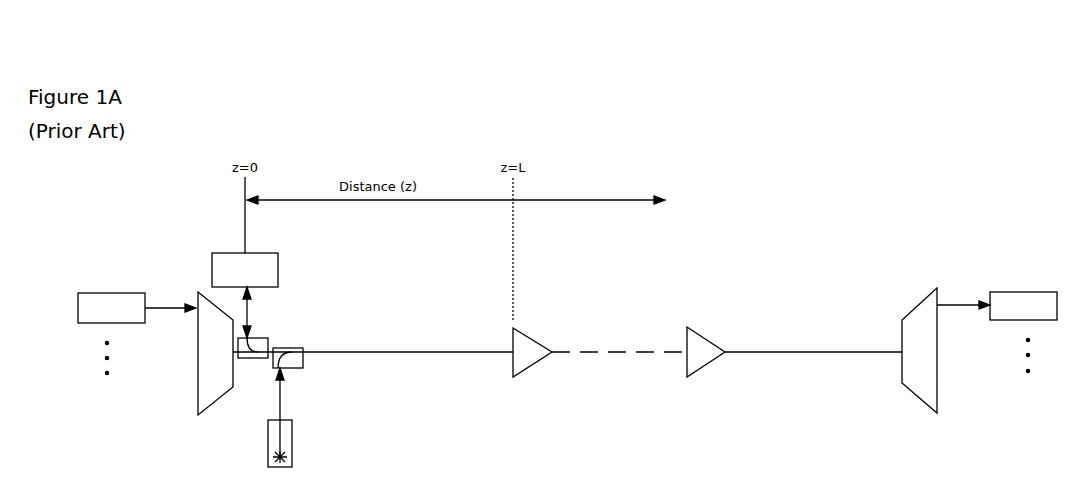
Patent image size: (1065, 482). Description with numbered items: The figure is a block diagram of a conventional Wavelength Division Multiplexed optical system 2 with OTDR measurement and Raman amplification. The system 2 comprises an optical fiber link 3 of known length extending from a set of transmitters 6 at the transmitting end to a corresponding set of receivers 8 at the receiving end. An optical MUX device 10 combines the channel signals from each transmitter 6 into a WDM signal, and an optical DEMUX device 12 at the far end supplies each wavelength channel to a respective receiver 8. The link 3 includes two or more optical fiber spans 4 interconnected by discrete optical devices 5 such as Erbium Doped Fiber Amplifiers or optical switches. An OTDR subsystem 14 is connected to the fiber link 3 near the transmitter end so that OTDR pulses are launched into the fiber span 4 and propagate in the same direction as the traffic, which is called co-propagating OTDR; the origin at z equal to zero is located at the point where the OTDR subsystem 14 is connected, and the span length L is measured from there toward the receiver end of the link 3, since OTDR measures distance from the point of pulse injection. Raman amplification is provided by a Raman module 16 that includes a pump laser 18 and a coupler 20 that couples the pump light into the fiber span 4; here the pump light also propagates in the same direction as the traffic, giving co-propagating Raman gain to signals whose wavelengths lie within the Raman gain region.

The optical system 2 is at (924, 176).
The optical fiber link 3 is at (726, 289).
The optical fiber span 4 is at (390, 351).
The discrete optical device 5 is at (538, 333).
The transmitter 6 is at (97, 292).
The receiver 8 is at (1030, 291).
The optical MUX device 10 is at (195, 405).
The optical DEMUX device 12 is at (940, 395).
The OTDR subsystem 14 is at (281, 268).
The Raman module 16 is at (310, 423).
The pump laser 18 is at (268, 439).
The coupler 20 is at (296, 345).